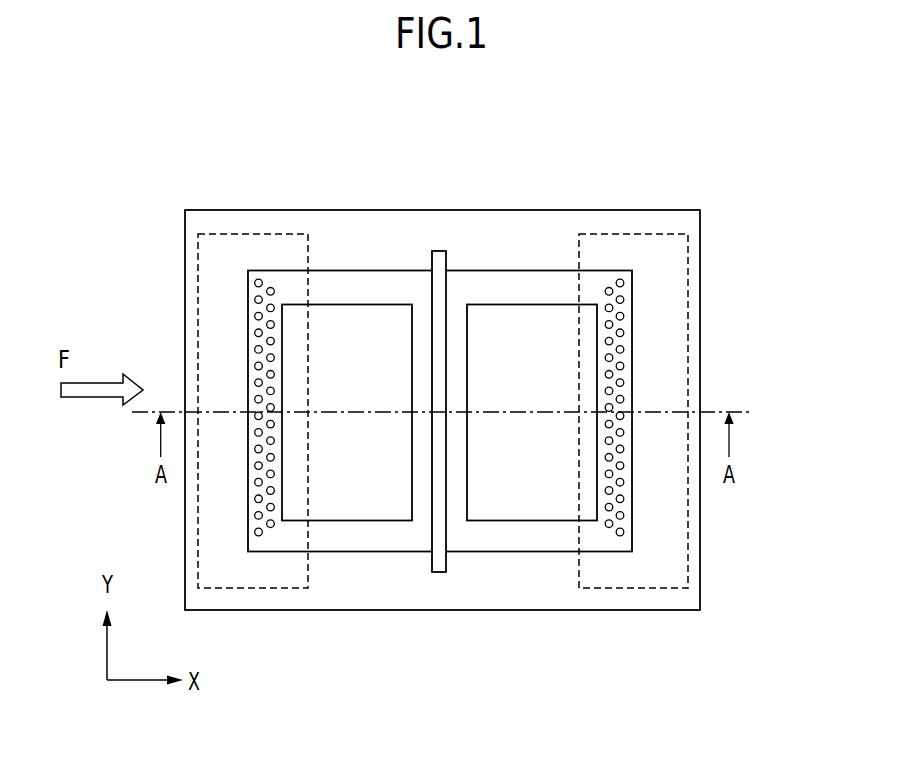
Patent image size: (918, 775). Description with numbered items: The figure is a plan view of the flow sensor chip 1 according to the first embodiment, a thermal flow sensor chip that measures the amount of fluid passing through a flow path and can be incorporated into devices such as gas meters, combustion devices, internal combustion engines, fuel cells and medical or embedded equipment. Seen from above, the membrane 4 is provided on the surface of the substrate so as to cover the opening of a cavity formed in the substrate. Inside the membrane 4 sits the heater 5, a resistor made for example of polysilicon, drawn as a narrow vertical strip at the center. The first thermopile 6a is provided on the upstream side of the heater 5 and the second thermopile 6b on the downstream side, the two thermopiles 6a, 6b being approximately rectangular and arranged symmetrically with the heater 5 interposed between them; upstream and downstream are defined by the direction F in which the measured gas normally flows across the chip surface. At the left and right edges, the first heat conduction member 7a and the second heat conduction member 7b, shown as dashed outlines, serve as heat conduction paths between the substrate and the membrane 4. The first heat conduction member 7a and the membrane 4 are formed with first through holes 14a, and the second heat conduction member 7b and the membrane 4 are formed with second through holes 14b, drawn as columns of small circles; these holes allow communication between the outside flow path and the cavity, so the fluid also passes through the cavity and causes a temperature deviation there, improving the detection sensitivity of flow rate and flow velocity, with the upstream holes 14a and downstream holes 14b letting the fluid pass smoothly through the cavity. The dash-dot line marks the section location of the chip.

The flow sensor chip 1 is at (472, 345).
The membrane 4 is at (692, 303).
The heater 5 is at (438, 251).
The first thermopile 6a is at (355, 313).
The second thermopile 6b is at (538, 313).
The first heat conduction member 7a is at (243, 234).
The second heat conduction member 7b is at (645, 234).
The first through holes 14a is at (254, 398).
The second through holes 14b is at (605, 390).